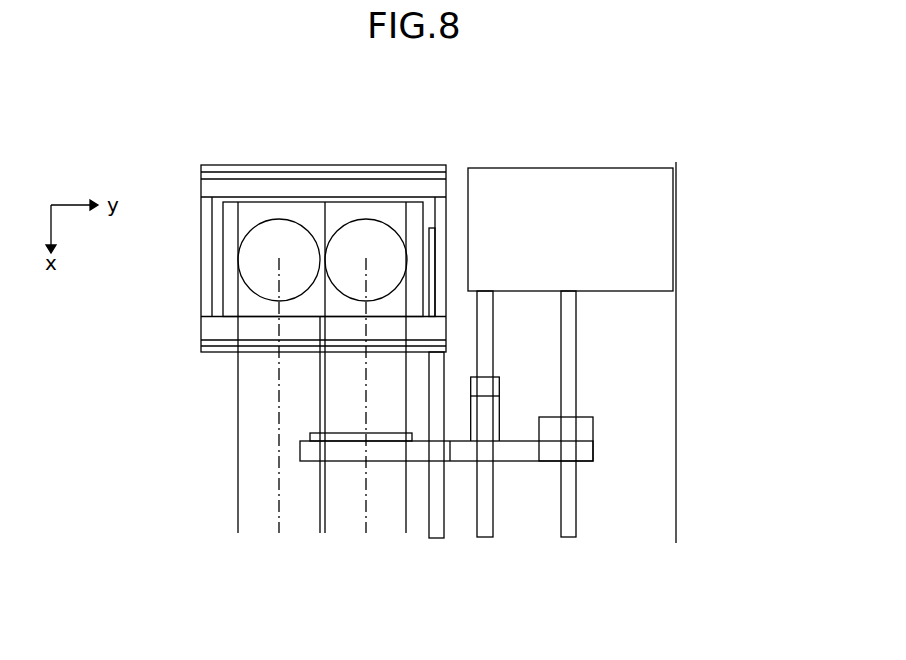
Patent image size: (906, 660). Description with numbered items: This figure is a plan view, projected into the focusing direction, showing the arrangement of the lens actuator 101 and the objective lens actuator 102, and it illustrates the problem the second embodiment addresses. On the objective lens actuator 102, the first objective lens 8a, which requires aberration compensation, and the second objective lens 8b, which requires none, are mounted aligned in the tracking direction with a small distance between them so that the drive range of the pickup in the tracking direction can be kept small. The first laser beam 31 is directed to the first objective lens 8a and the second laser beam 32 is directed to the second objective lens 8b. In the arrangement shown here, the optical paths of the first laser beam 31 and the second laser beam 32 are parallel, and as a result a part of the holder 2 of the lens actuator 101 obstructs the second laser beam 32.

The holder 2 is at (500, 453).
The first objective lens 8a is at (378, 245).
The second objective lens 8b is at (278, 247).
The first laser beam 31 is at (250, 430).
The second laser beam 32 is at (372, 498).
The lens actuator 101 is at (672, 365).
The objective lens actuator 102 is at (177, 190).